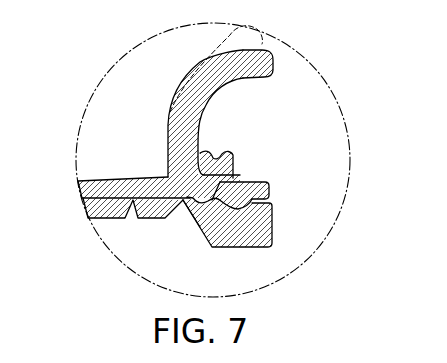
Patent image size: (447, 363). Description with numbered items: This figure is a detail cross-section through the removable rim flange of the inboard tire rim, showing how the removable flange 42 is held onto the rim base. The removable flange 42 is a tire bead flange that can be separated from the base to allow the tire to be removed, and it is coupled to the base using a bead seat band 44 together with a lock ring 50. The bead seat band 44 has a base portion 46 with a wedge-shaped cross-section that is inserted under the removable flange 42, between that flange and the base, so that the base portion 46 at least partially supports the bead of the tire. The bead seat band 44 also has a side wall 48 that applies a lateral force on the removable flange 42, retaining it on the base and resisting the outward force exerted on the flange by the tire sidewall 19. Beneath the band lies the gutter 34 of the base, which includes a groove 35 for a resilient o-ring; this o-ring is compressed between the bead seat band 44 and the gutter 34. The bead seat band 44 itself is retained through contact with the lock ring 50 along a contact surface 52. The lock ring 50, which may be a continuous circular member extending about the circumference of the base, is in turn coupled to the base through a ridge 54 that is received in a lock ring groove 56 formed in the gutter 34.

The sidewall 19 is at (263, 34).
The gutter 34 is at (258, 223).
The groove 35 is at (180, 215).
The removable flange 42 is at (264, 68).
The bead seat band 44 is at (163, 175).
The base portion 46 is at (106, 178).
The side wall 48 is at (225, 151).
The lock ring 50 is at (262, 182).
The contact surface 52 is at (223, 176).
The ridge 54 is at (242, 209).
The lock ring groove 56 is at (213, 232).